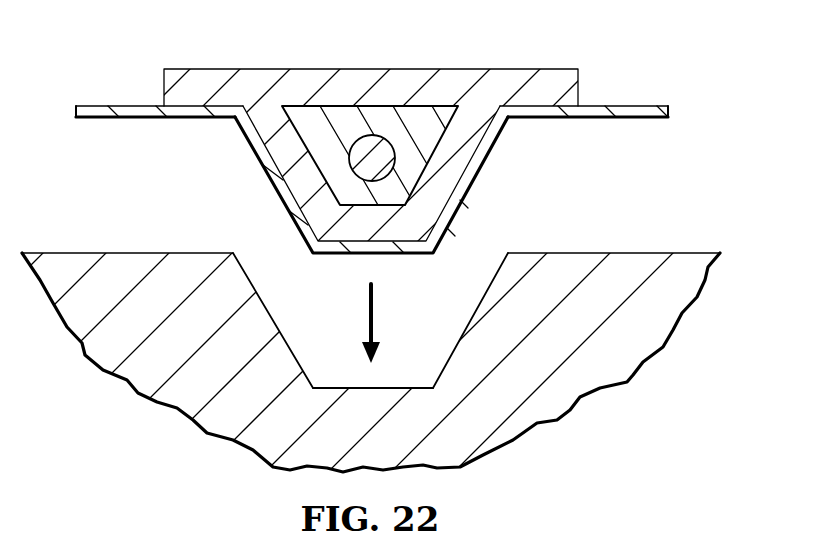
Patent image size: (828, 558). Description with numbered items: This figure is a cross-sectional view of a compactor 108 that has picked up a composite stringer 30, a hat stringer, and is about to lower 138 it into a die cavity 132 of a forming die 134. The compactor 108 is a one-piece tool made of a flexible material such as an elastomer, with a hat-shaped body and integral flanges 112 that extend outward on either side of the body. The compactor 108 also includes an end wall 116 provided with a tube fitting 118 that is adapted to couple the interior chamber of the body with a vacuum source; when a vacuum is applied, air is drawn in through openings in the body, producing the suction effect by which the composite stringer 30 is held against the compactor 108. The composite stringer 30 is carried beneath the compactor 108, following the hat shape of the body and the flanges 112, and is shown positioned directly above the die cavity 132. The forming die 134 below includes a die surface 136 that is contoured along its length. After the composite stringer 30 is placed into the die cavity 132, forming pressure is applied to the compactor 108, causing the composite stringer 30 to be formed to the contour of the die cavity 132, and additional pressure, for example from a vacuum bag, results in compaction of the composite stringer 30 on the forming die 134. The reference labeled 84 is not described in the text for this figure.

The composite stringer 30 is at (632, 103).
The sheet metal blank (left flange portion) 84 is at (130, 112).
The compactor 108 is at (260, 124).
The integral flanges 112 is at (510, 78).
The end wall 116 is at (342, 110).
The tube fitting 118 is at (372, 143).
The die cavity 132 is at (259, 244).
The forming die 134 is at (127, 263).
The die surface 136 is at (489, 257).
The lowering direction 138 is at (375, 312).